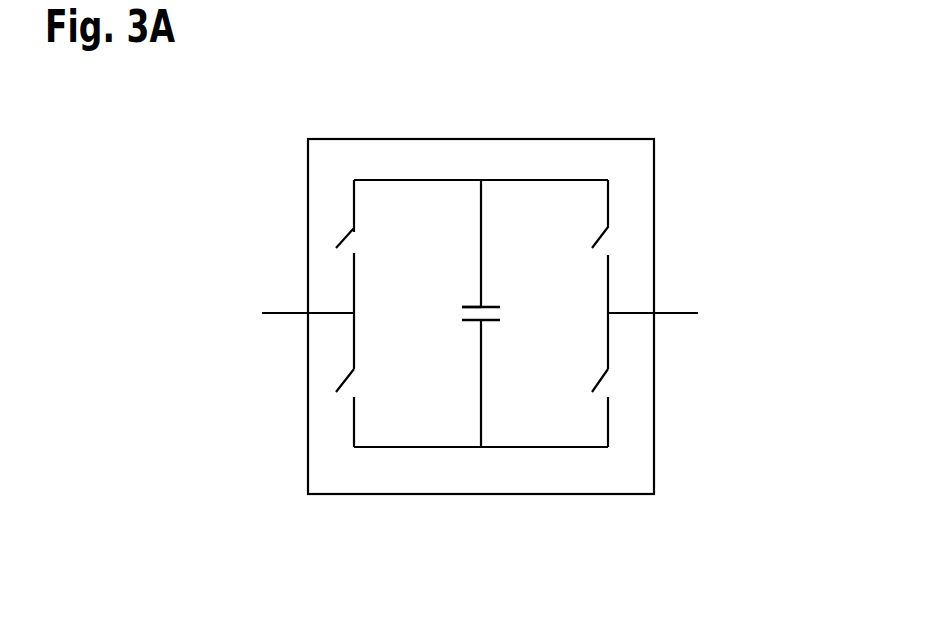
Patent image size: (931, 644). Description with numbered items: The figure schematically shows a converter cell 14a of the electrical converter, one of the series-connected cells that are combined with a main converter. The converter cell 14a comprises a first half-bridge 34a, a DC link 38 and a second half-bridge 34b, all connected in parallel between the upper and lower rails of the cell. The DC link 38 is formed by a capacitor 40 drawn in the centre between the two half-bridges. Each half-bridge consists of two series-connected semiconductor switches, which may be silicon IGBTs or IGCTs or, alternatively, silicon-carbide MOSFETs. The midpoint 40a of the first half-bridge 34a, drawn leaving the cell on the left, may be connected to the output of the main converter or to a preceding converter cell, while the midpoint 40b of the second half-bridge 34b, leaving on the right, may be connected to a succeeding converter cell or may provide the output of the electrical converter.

The converter cell 14a is at (654, 97).
The first half-bridge 34a is at (330, 500).
The second half-bridge 34b is at (632, 500).
The DC link 38 is at (514, 268).
The capacitor 40 is at (470, 306).
The midpoint of the first half-bridge 40a is at (353, 316).
The midpoint of the second half-bridge 40b is at (610, 316).